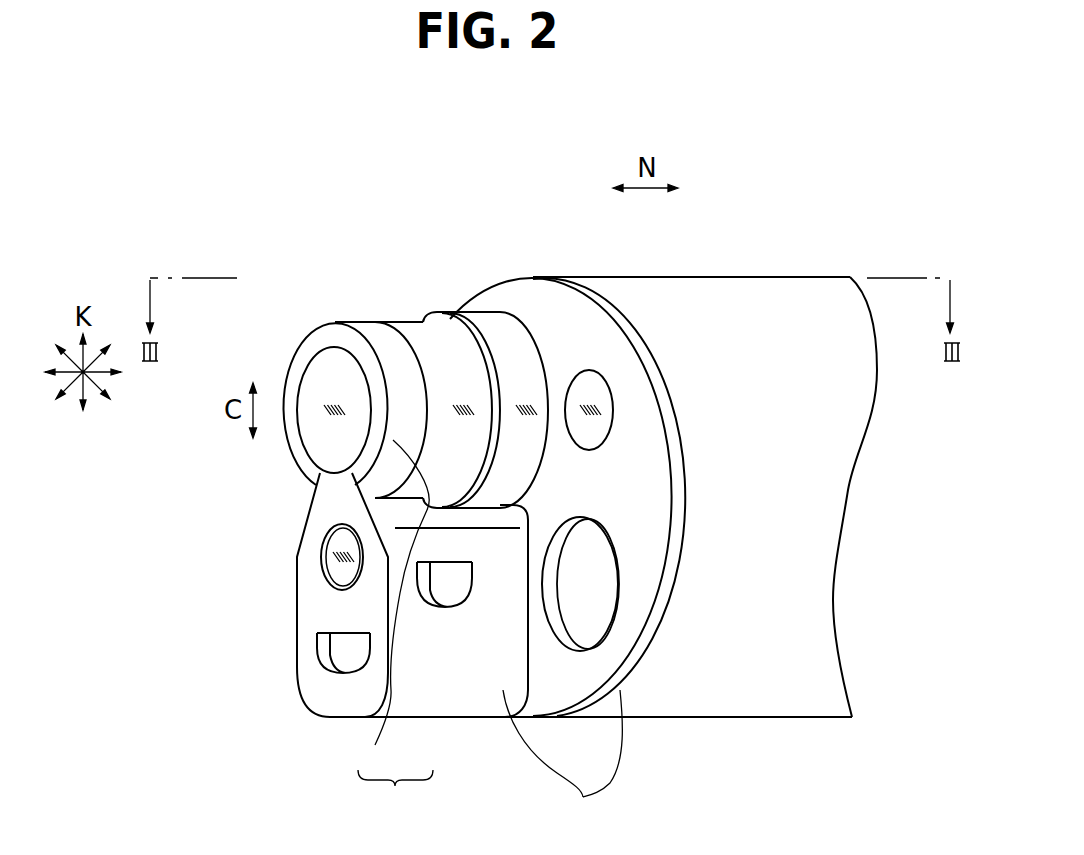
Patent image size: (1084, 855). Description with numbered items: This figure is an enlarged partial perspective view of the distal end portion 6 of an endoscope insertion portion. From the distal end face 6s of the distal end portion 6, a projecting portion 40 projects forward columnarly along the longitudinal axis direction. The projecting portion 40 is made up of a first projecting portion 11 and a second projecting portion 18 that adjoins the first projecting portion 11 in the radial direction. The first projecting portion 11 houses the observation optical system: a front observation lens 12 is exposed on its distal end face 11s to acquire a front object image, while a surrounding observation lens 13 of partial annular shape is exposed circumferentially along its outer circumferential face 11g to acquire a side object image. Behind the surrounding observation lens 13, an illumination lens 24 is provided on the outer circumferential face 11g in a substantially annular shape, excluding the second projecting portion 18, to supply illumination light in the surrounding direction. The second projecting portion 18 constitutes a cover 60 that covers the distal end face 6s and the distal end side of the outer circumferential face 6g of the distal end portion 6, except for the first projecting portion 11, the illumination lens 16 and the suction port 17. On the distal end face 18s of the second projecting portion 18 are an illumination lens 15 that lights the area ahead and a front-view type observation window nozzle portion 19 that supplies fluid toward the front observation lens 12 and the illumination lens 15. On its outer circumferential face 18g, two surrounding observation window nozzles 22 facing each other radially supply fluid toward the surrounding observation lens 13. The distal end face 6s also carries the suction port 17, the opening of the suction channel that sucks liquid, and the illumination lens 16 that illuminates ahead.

The distal end portion 6 is at (730, 347).
The distal end face 6s is at (643, 522).
The outer circumferential face 6g is at (783, 697).
The first projecting portion 11 is at (393, 609).
The distal end face of first projecting portion 11s is at (325, 333).
The outer circumferential face of first projecting portion 11g is at (388, 352).
The front observation lens 12 is at (327, 370).
The surrounding observation lens 13 is at (433, 342).
The illumination lens 15 is at (335, 575).
The illumination lens 16 is at (595, 387).
The suction port 17 is at (585, 623).
The second projecting portion 18 is at (425, 705).
The distal end face of second projecting portion 18s is at (318, 620).
The outer circumferential face of second projecting portion 18g is at (417, 513).
The front-view type observation window nozzle portion 19 is at (342, 652).
The surrounding observation window nozzle 22 is at (448, 582).
The illumination lens 24 is at (518, 357).
The projecting portion 40 is at (395, 793).
The cover 60 is at (562, 761).